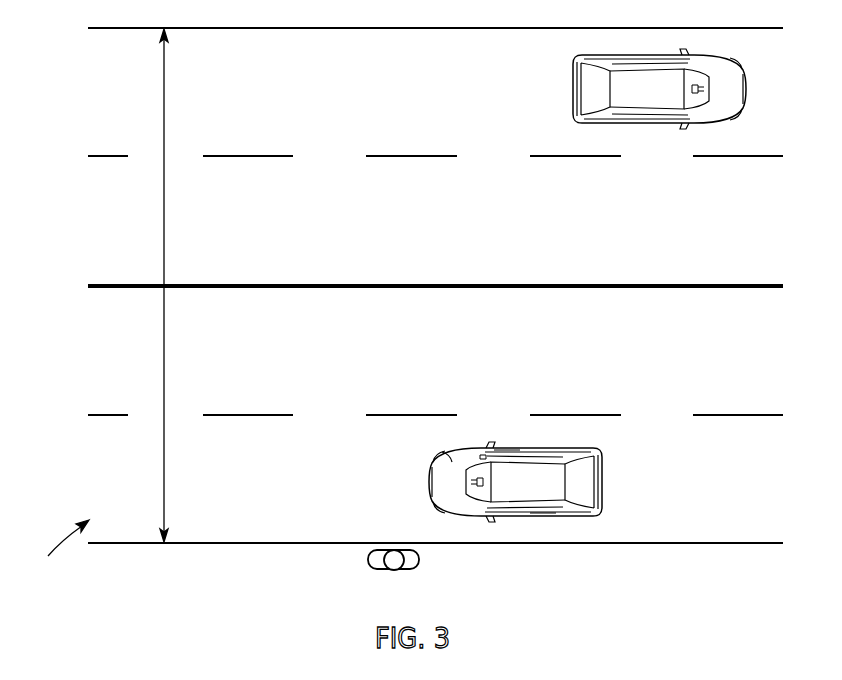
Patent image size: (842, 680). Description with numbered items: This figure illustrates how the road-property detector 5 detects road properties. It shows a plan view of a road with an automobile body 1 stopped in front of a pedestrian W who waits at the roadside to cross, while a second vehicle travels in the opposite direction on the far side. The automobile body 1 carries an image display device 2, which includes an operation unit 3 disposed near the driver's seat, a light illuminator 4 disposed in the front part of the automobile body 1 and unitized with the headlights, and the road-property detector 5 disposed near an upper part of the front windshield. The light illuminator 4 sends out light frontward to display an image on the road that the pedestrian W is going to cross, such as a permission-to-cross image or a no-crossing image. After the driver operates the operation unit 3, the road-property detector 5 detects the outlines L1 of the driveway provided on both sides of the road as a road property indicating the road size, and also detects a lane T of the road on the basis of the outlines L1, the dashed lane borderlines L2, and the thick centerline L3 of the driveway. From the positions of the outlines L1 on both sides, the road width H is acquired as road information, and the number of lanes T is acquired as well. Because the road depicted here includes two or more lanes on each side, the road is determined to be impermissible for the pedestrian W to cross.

The automobile body 1 is at (543, 514).
The image display device 2 is at (457, 438).
The operation unit 3 is at (484, 453).
The light illuminator 4 is at (448, 452).
The road-property detector 5 is at (499, 452).
The outlines of the driveway L1 is at (248, 27).
The lane borderlines L2 is at (248, 155).
The centerline of the driveway L3 is at (248, 285).
The road width H is at (157, 285).
The lane of the road T is at (59, 548).
The pedestrian W is at (420, 556).